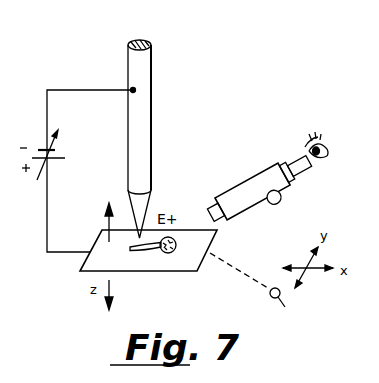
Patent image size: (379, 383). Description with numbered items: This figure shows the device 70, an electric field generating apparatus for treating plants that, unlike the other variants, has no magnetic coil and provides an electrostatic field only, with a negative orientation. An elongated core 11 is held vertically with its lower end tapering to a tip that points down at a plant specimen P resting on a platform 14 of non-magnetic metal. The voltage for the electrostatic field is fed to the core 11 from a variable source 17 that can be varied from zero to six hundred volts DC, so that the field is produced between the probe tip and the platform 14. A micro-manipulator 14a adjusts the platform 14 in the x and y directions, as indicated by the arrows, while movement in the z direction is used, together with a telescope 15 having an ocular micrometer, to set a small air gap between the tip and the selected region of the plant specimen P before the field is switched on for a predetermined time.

The core 11 is at (143, 67).
The source 17 is at (43, 147).
The device 70 is at (221, 116).
The telescope 15 is at (243, 195).
The platform 14 is at (210, 245).
The micro-manipulator 14a is at (259, 289).
The plant specimen P is at (141, 253).